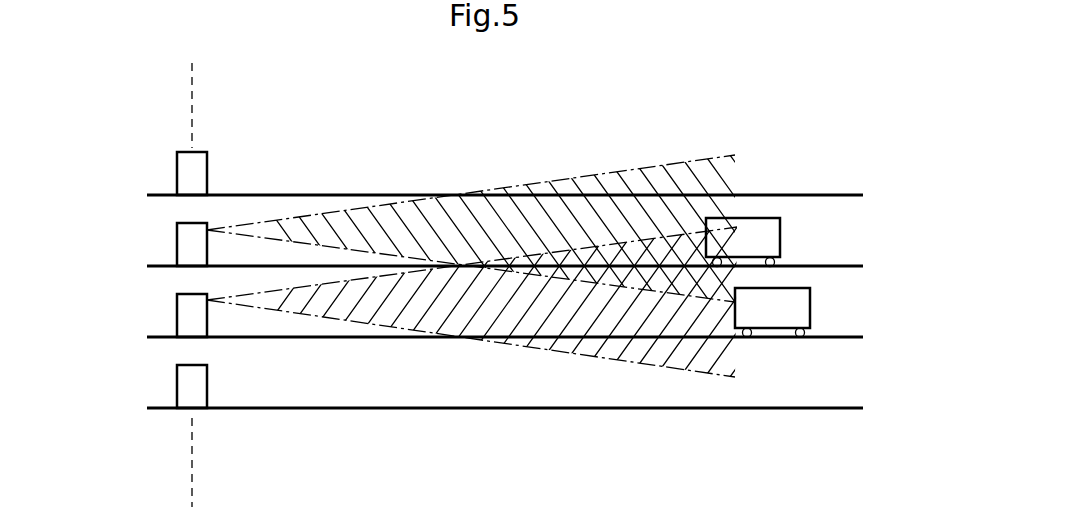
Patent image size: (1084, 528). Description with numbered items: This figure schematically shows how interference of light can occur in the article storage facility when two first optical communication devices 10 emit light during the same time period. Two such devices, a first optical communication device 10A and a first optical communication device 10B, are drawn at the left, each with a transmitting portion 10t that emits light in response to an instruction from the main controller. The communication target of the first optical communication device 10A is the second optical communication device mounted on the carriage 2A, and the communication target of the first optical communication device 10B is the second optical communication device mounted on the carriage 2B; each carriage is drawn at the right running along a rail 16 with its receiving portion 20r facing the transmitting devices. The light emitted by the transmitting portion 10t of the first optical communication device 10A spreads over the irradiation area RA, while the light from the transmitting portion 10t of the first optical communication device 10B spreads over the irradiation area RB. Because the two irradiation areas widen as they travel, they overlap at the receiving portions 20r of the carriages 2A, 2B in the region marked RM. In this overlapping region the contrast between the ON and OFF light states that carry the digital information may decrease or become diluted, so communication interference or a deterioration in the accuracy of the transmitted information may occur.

The carriage 2A is at (753, 233).
The carriage 2B is at (800, 313).
The first optical communication device 10 is at (188, 173).
The first optical communication device 10A is at (188, 252).
The first optical communication device 10B is at (188, 325).
The transmitting portion 10t is at (209, 223).
The travel rail 16 is at (790, 198).
The receiving portion 20r is at (701, 227).
The irradiation area RA is at (587, 190).
The irradiation area RB is at (583, 347).
The overlapping irradiation area RM is at (657, 278).